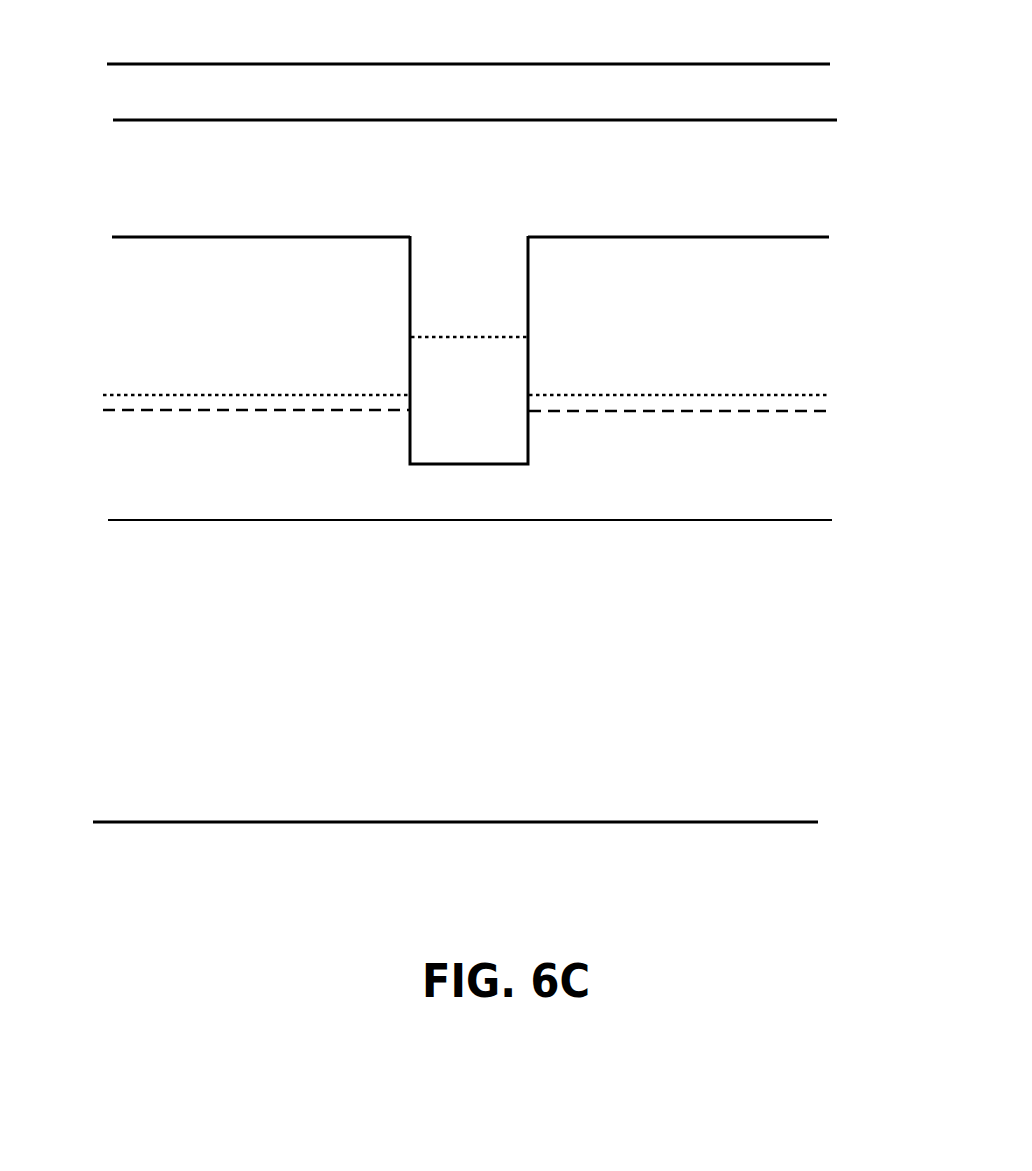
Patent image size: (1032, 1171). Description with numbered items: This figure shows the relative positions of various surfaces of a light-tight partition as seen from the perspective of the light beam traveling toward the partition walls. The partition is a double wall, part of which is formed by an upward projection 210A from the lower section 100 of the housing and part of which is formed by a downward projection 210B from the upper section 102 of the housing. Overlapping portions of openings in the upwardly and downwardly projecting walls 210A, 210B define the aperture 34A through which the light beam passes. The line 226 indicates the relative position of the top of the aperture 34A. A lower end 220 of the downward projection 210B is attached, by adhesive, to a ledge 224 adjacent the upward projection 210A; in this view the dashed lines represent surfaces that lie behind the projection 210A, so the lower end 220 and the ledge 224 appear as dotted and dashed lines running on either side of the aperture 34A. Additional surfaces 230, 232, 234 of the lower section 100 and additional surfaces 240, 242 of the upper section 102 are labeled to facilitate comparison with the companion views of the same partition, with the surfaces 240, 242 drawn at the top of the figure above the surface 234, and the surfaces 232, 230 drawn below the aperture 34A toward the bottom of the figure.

The lower section 100 is at (772, 733).
The upper section 102 is at (820, 92).
The upward projection 210A is at (300, 336).
The downward projection 210B is at (300, 176).
The lower end 220 is at (772, 394).
The ledge 224 is at (682, 414).
The line 226 is at (458, 335).
The additional surface 230 is at (653, 824).
The additional surface 232 is at (164, 522).
The additional surface 234 is at (158, 235).
The additional surface 240 is at (192, 63).
The additional surface 242 is at (148, 120).
The aperture 34A is at (495, 442).